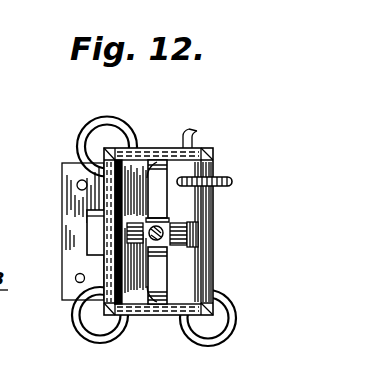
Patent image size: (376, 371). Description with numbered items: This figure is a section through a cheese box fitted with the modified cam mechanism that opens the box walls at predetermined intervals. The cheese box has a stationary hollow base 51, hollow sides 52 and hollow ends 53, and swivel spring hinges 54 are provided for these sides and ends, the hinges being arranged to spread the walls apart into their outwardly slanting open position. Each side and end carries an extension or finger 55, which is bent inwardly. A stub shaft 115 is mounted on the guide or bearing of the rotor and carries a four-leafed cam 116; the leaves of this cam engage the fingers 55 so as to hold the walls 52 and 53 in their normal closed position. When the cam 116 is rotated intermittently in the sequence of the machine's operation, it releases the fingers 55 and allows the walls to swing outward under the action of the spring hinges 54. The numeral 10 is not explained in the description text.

The frame 10 is at (66, 215).
The stationary hollow base 51 is at (178, 272).
The hollow sides 52 is at (218, 202).
The hollow ends 53 is at (165, 148).
The swivel spring hinges 54 is at (52, 231).
The extension or finger 55 is at (190, 168).
The stub shaft 115 is at (172, 240).
The four-leafed cam 116 is at (213, 237).